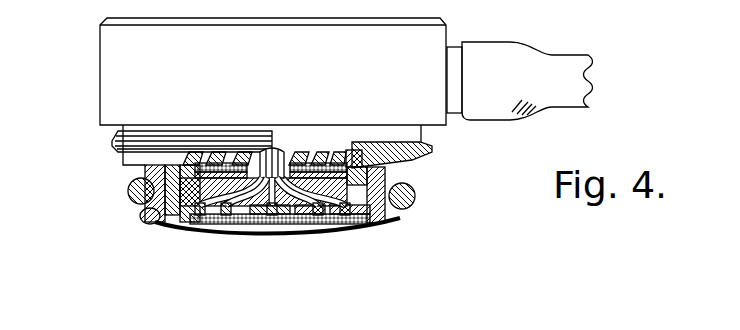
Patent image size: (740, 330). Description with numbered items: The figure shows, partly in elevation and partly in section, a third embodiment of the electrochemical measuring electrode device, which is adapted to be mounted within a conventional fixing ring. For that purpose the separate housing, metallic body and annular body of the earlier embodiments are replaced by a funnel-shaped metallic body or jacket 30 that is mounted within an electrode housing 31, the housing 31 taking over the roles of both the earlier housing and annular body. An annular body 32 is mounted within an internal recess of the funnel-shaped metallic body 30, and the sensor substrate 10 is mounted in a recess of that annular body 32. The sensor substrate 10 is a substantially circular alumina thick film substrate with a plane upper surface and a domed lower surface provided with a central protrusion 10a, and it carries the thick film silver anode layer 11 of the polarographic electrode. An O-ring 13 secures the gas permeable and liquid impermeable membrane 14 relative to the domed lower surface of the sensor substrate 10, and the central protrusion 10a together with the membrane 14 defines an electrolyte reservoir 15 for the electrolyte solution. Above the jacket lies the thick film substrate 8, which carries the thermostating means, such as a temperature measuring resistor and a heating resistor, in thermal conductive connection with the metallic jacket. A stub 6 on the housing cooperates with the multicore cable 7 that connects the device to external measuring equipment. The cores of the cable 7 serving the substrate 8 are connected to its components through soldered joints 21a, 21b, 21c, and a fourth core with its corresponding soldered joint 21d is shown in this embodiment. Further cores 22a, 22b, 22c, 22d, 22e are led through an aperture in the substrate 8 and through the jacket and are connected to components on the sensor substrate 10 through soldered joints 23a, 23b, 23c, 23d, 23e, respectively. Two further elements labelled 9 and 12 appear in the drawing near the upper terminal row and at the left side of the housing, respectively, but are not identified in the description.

The stub 6 is at (456, 47).
The multicore cable 7 is at (497, 42).
The thick film substrate 8 is at (198, 156).
The terminal 9 is at (320, 153).
The sensor substrate 10 is at (176, 240).
The central protrusion 10a is at (257, 236).
The anode layer 11 is at (362, 232).
The housing 12 is at (146, 212).
The O-ring 13 is at (128, 190).
The membrane 14 is at (398, 224).
The electrolyte reservoir 15 is at (340, 234).
The soldered joint 21a is at (250, 157).
The soldered joint 21b is at (302, 157).
The soldered joint 21c is at (336, 155).
The soldered joint 21d is at (217, 157).
The core 22a is at (186, 230).
The core 22b is at (234, 232).
The core 22c is at (262, 156).
The core 22d is at (303, 236).
The core 22e is at (358, 150).
The soldered joint 23a is at (196, 242).
The soldered joint 23b is at (240, 240).
The soldered joint 23c is at (285, 240).
The soldered joint 23d is at (330, 240).
The soldered joint 23e is at (366, 240).
The funnel-shaped metallic body 30 is at (405, 178).
The electrode housing 31 is at (113, 142).
The annular body 32 is at (158, 224).